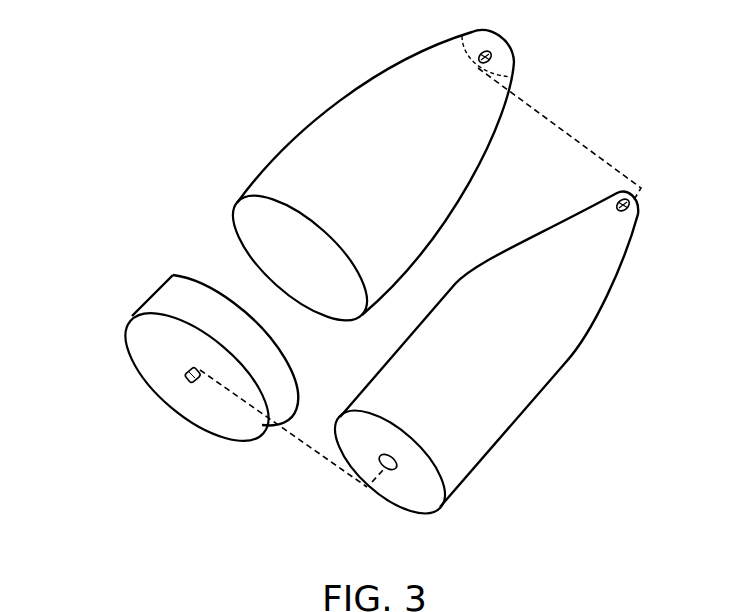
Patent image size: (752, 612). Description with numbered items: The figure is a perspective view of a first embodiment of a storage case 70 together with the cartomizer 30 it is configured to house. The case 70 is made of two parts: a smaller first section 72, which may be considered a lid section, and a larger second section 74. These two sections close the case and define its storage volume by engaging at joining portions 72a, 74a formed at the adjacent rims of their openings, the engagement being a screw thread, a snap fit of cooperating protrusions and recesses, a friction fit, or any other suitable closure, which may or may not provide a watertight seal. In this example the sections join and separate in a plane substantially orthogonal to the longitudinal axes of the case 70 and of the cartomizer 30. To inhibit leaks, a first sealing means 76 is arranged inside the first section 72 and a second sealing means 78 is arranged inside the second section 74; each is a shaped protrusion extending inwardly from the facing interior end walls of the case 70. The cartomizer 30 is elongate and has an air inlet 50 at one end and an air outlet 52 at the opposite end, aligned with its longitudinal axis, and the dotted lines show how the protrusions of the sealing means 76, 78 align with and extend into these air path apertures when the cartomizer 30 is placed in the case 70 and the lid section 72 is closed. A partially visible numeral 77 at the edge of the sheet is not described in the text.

The case 70 is at (144, 180).
The second section 74 is at (376, 171).
The joining portion 74a is at (236, 202).
The second sealing means 78 is at (495, 52).
The cartomizer 30 is at (503, 380).
The air inlet 50 is at (394, 470).
The fastener / pin 52 is at (630, 212).
The first section 72 is at (191, 348).
The joining portion 72a is at (172, 276).
The first sealing means 76 is at (197, 386).
The sheet numeral 77 is at (616, 604).